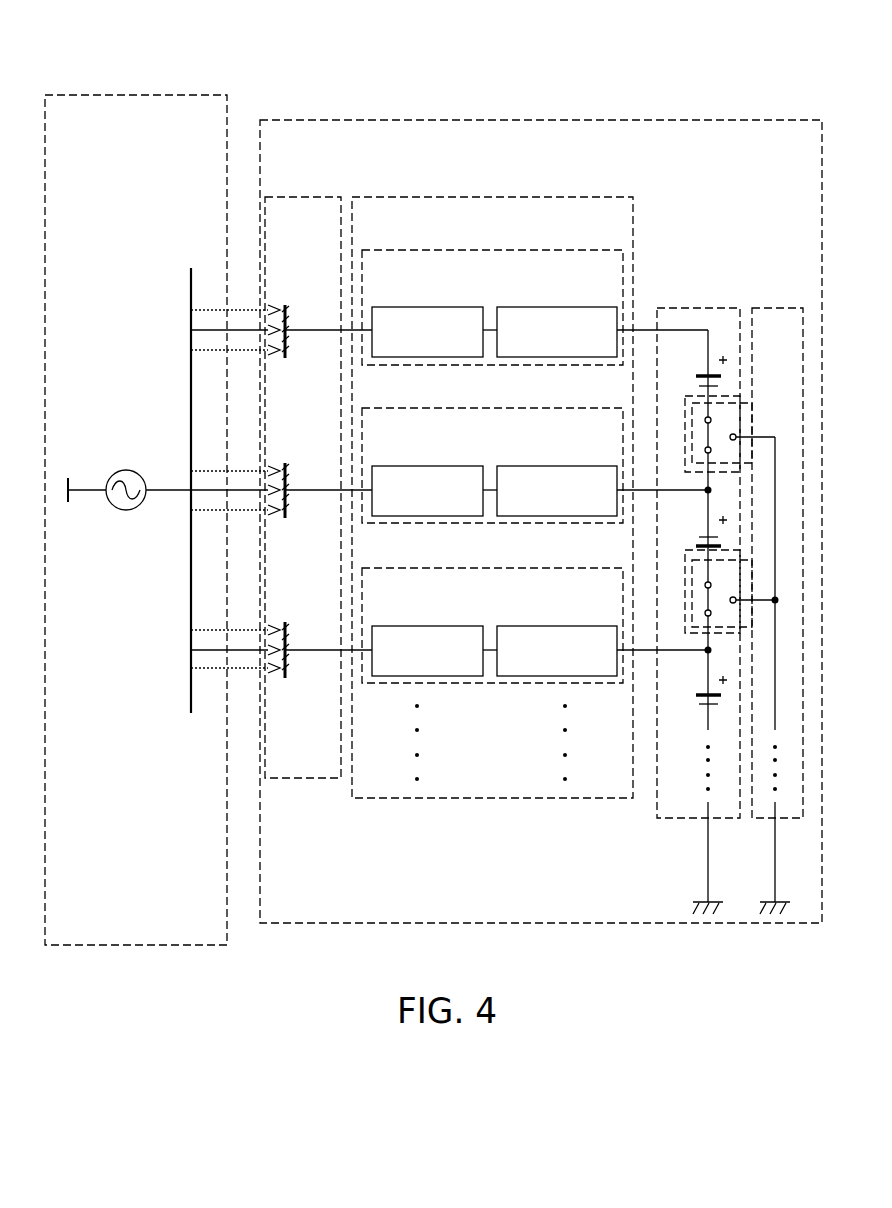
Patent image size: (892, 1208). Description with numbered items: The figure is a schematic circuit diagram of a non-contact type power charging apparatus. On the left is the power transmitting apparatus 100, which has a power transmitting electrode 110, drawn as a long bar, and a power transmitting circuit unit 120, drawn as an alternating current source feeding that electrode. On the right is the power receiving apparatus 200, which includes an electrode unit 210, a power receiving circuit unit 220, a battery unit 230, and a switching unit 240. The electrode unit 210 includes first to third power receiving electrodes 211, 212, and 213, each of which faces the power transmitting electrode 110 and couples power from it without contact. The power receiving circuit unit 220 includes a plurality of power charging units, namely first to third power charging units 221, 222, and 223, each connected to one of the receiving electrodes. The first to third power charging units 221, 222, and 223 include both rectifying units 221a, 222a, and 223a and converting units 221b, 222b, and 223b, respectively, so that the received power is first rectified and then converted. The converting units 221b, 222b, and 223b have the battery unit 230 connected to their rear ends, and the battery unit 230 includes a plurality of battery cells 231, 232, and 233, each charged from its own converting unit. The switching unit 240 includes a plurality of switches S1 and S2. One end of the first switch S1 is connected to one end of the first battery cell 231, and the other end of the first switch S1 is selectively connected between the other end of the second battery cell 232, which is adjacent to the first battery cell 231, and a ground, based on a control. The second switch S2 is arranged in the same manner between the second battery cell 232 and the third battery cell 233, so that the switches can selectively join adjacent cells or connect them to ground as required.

The power transmitting apparatus 100 is at (147, 97).
The power transmitting electrode 110 is at (191, 292).
The power transmitting circuit unit 120 is at (126, 470).
The power receiving apparatus 200 is at (640, 120).
The electrode unit 210 is at (292, 197).
The first power receiving electrode 211 is at (290, 322).
The second power receiving electrode 212 is at (290, 482).
The third power receiving electrode 213 is at (290, 642).
The power receiving circuit unit 220 is at (490, 197).
The first power charging unit 221 is at (492, 285).
The rectifying unit 221a is at (425, 307).
The converting unit 221b is at (562, 307).
The second power charging unit 222 is at (492, 445).
The rectifying unit 222a is at (425, 466).
The converting unit 222b is at (562, 466).
The third power charging unit 223 is at (492, 604).
The rectifying unit 223a is at (425, 626).
The converting unit 223b is at (562, 626).
The battery unit 230 is at (716, 577).
The first battery cell 231 is at (702, 376).
The second battery cell 232 is at (703, 537).
The third battery cell 233 is at (703, 695).
The switching unit 240 is at (777, 308).
The first switch S1 is at (730, 434).
The second switch S2 is at (730, 591).